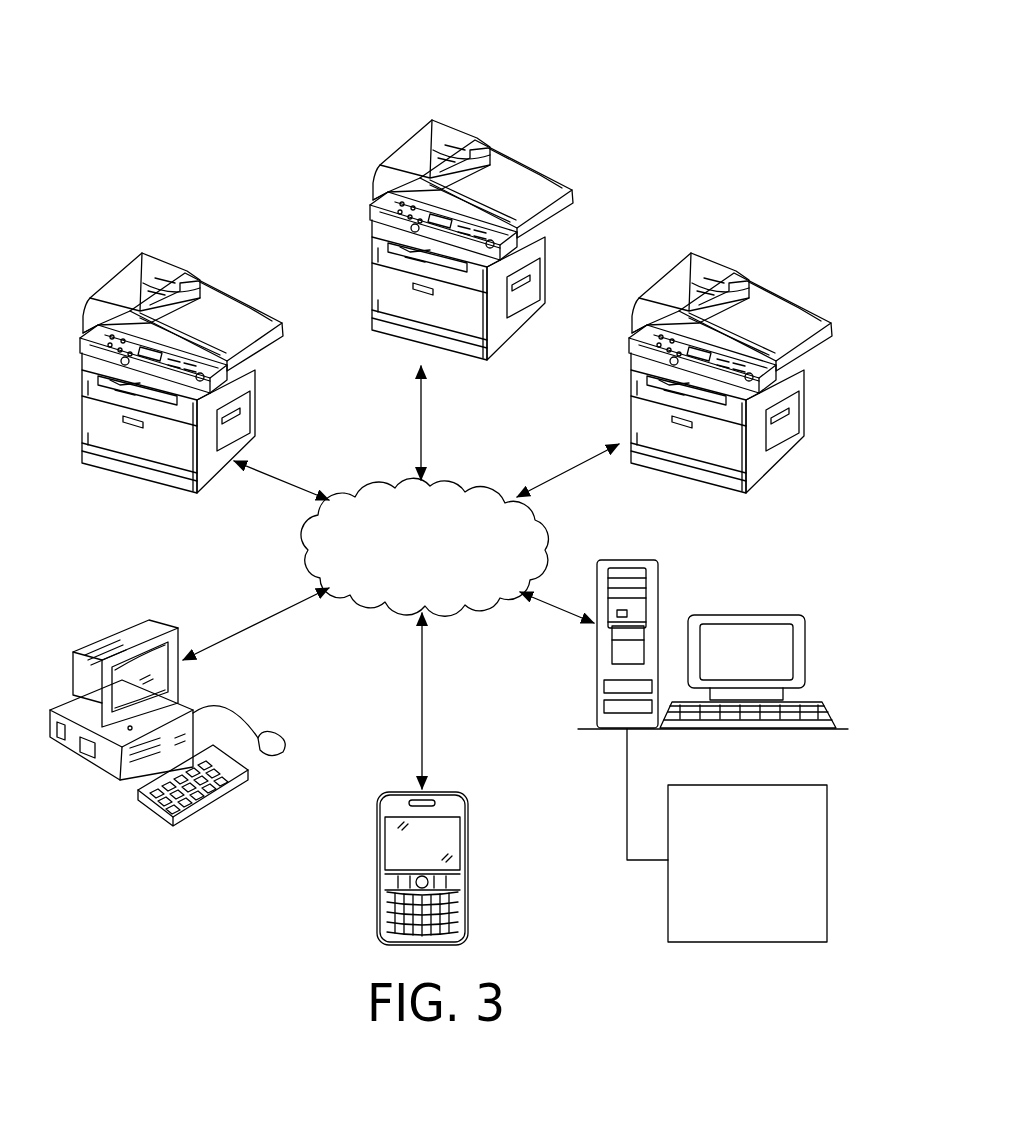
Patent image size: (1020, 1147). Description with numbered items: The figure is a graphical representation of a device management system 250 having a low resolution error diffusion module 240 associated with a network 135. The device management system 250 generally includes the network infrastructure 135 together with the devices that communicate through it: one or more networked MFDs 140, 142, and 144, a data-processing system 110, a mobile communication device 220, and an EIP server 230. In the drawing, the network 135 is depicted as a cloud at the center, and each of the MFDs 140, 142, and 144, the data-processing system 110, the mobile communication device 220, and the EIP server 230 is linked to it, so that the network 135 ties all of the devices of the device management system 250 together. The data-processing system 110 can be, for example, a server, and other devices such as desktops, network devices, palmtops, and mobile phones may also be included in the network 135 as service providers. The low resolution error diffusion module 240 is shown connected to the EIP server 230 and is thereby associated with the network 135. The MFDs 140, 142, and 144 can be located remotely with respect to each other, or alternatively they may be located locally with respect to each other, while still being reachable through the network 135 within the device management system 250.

The device management system 250 is at (628, 92).
The networked MFD 140 is at (403, 150).
The networked MFD 142 is at (120, 275).
The networked MFD 144 is at (667, 280).
The network 135 is at (465, 610).
The data-processing system 110 is at (153, 633).
The mobile communication device 220 is at (377, 848).
The EIP server 230 is at (660, 583).
The low resolution error diffusion module 240 is at (668, 895).